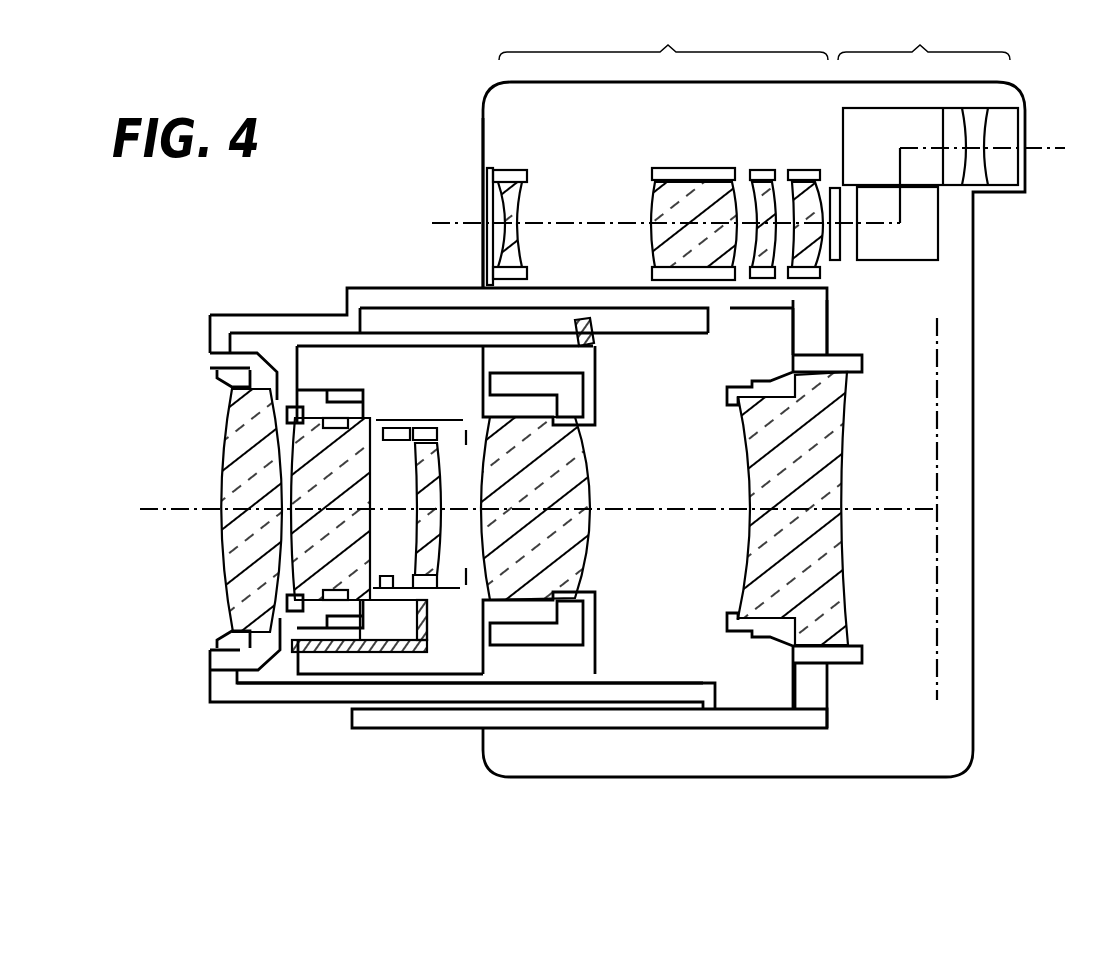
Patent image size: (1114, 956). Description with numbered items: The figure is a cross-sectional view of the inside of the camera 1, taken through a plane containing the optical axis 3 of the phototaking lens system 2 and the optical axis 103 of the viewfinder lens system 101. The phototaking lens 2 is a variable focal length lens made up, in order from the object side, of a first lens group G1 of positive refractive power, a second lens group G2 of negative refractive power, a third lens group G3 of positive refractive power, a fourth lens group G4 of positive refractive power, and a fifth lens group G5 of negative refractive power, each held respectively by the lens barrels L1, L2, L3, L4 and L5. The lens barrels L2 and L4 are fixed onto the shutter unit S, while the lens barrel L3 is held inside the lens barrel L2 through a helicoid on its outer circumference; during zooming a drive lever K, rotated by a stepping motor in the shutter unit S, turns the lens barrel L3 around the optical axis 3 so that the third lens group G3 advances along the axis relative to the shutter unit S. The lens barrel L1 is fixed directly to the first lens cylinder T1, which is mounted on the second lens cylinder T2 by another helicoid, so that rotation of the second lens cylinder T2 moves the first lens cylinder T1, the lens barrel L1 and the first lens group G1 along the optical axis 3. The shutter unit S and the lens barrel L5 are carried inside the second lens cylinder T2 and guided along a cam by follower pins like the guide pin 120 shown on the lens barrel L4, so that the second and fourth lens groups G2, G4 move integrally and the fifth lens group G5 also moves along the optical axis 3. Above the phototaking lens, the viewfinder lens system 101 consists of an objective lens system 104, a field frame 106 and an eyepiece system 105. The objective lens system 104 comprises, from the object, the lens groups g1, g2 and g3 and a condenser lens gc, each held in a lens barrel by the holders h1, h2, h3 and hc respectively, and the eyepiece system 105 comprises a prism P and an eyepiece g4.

The camera 1 is at (497, 778).
The phototaking lens system 2 is at (315, 712).
The optical axis 3 is at (178, 497).
The viewfinder lens system 101 is at (482, 120).
The optical axis 103 is at (464, 212).
The objective lens system 104 is at (663, 39).
The eyepiece system 105 is at (924, 39).
The field frame 106 is at (840, 263).
The follower pin 120 is at (600, 343).
The holder h1 is at (531, 164).
The holder h2 is at (650, 180).
The holder h3 is at (765, 167).
The holder hc is at (808, 173).
The lens group g1 is at (527, 248).
The lens group g2 is at (653, 250).
The lens group g3 is at (740, 187).
The eyepiece g4 is at (1010, 127).
The condenser lens gc is at (793, 167).
The prism P is at (923, 262).
The lens barrel L1 is at (212, 365).
The lens barrel L2 is at (317, 395).
The lens barrel L3 is at (422, 440).
The lens barrel L4 is at (595, 398).
The lens barrel L5 is at (850, 352).
The first lens group G1 is at (230, 590).
The second lens group G2 is at (368, 519).
The third lens group G3 is at (434, 549).
The fourth lens group G4 is at (582, 548).
The fifth lens group G5 is at (747, 556).
The first lens cylinder T1 is at (213, 707).
The second lens cylinder T2 is at (393, 730).
The drive lever K is at (415, 625).
The shutter unit S is at (458, 640).